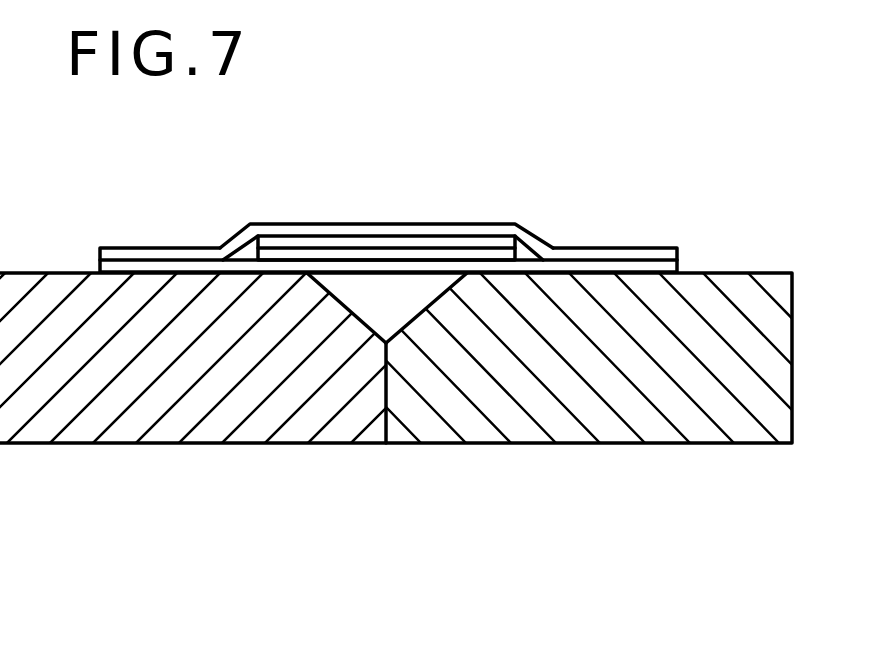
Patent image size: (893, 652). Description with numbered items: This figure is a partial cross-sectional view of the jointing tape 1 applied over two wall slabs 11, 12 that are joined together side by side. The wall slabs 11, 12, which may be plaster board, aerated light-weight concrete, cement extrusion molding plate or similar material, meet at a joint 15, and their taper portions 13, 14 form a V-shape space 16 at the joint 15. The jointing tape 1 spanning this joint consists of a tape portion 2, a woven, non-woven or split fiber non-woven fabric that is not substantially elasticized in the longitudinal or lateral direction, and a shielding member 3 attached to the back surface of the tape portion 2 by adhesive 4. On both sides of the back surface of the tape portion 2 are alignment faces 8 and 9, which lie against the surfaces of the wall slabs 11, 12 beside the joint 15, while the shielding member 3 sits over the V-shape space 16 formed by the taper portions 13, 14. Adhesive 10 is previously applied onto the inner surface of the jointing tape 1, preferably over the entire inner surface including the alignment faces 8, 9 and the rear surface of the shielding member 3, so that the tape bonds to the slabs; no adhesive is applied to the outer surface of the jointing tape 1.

The jointing tape 1 is at (388, 320).
The tape portion 2 is at (152, 252).
The shielding member 3 is at (462, 257).
The adhesive 4 is at (290, 242).
The alignment face 8 is at (133, 262).
The alignment face 9 is at (638, 262).
The adhesive 10 is at (398, 268).
The wall slab 11 is at (83, 395).
The wall slab 12 is at (748, 422).
The taper portion 13 is at (333, 300).
The taper portion 14 is at (443, 303).
The joint 15 is at (386, 450).
The V-shape space 16 is at (355, 290).